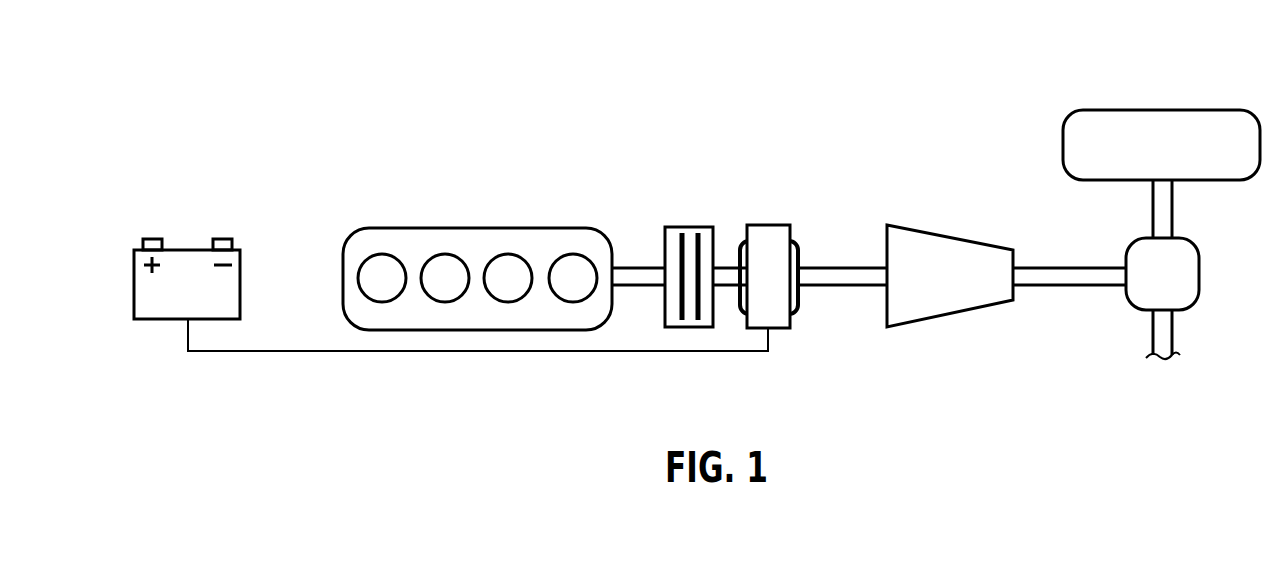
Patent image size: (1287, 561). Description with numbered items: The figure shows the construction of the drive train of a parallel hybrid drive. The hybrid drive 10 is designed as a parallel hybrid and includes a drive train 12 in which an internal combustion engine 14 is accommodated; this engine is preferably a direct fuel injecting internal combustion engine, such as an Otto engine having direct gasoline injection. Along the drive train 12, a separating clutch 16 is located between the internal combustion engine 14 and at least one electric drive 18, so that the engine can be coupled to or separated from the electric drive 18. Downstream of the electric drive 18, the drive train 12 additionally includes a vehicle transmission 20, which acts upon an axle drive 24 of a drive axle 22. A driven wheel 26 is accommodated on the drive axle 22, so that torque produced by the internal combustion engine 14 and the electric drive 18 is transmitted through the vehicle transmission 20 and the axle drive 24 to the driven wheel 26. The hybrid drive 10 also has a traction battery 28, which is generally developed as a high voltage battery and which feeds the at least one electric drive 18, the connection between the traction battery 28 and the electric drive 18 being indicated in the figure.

The hybrid drive 10 is at (718, 133).
The drive train 12 is at (818, 333).
The internal combustion engine 14 is at (413, 240).
The separating clutch 16 is at (689, 237).
The electric drive 18 is at (767, 238).
The vehicle transmission 20 is at (937, 250).
The drive axle 22 is at (1163, 330).
The axle drive 24 is at (1188, 275).
The driven wheel 26 is at (1161, 122).
The traction battery 28 is at (186, 259).